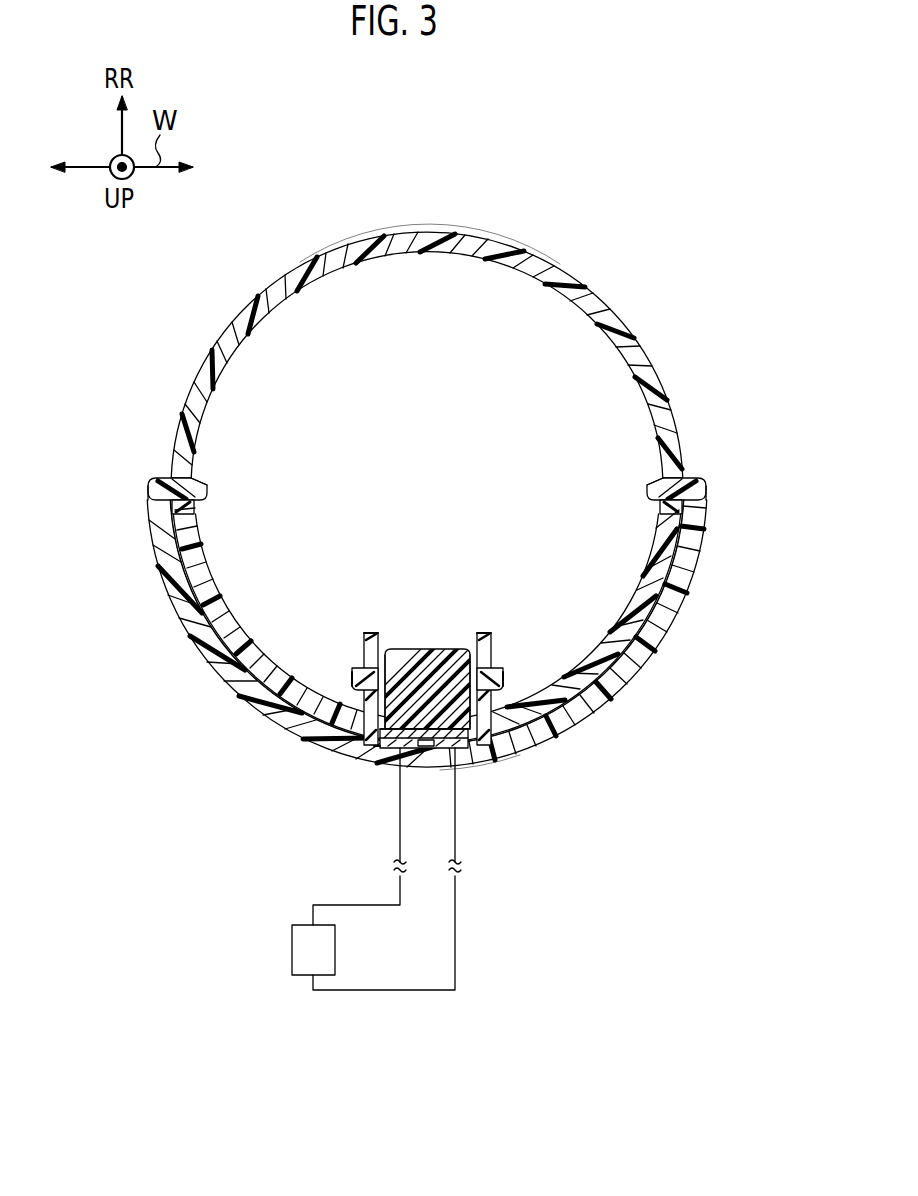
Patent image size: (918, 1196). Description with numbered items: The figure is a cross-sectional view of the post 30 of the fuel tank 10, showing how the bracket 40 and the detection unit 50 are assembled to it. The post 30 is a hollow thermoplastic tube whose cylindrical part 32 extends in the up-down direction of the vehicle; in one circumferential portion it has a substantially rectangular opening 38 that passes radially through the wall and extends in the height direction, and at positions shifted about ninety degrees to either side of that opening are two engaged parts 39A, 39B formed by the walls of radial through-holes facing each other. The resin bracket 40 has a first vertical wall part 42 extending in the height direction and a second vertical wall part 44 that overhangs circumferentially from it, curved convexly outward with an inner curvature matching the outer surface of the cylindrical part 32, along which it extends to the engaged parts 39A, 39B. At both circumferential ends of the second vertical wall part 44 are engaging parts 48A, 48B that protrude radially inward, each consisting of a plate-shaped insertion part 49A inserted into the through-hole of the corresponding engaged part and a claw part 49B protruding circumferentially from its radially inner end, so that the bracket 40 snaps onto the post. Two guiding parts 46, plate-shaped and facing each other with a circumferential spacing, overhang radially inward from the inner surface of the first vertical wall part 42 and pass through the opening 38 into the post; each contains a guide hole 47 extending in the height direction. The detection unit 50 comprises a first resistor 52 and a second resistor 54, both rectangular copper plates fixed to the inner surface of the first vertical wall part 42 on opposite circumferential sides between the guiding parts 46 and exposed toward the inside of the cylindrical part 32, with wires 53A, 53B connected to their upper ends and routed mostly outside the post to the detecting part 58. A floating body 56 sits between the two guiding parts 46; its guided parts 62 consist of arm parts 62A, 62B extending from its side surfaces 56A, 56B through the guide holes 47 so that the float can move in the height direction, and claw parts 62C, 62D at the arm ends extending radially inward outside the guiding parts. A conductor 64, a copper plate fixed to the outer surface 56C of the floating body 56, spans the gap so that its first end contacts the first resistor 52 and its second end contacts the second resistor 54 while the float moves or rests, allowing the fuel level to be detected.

The fuel tank 10 is at (596, 158).
The post 30 is at (620, 302).
The cylindrical part 32 is at (652, 356).
The opening 38 is at (484, 744).
The engaged part 39A is at (196, 504).
The engaged part 39B is at (656, 504).
The bracket 40 is at (445, 657).
The first vertical wall part 42 is at (467, 769).
The second vertical wall part 44 is at (678, 608).
The guiding part 46 is at (378, 630).
The guide hole 47 is at (352, 678).
The engaging part 48A is at (209, 490).
The engaging part 48B is at (645, 490).
The insertion part 49A is at (172, 478).
The claw part 49B is at (204, 478).
The detection unit 50 is at (442, 869).
The first resistor 52 is at (396, 752).
The wire 53A is at (388, 848).
The wire 53B is at (466, 850).
The second resistor 54 is at (397, 785).
The floating body 56 is at (424, 630).
The side surface 56A is at (398, 646).
The side surface 56B is at (458, 644).
The outer surface 56C is at (442, 750).
The detecting part 58 is at (292, 950).
The guided part 62 is at (417, 638).
The arm part 62A is at (372, 650).
The arm part 62B is at (492, 640).
The claw part 62C is at (358, 640).
The claw part 62D is at (500, 660).
The conductor 64 is at (370, 748).